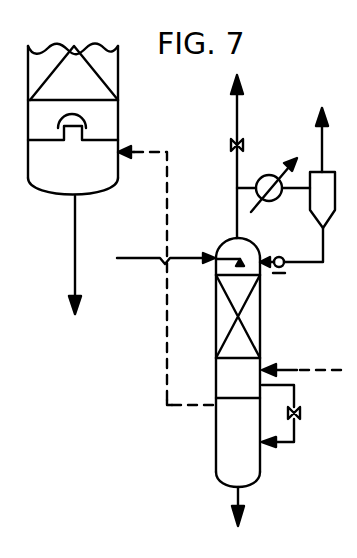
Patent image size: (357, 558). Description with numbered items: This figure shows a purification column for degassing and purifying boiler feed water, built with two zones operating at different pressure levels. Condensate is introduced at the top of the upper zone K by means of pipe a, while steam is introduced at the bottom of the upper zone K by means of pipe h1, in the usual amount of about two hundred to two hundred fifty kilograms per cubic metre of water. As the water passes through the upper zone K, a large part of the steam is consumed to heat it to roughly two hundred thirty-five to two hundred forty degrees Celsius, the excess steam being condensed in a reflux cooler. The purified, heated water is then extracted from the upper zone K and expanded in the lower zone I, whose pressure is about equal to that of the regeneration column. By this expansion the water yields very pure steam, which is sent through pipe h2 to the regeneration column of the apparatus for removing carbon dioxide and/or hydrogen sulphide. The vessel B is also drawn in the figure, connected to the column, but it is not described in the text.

The vessel / washing column B is at (100, 215).
The pipe a is at (166, 249).
The upper zone K is at (270, 297).
The pipe h1 is at (304, 361).
The pipe h2 is at (182, 409).
The lower zone I is at (230, 435).